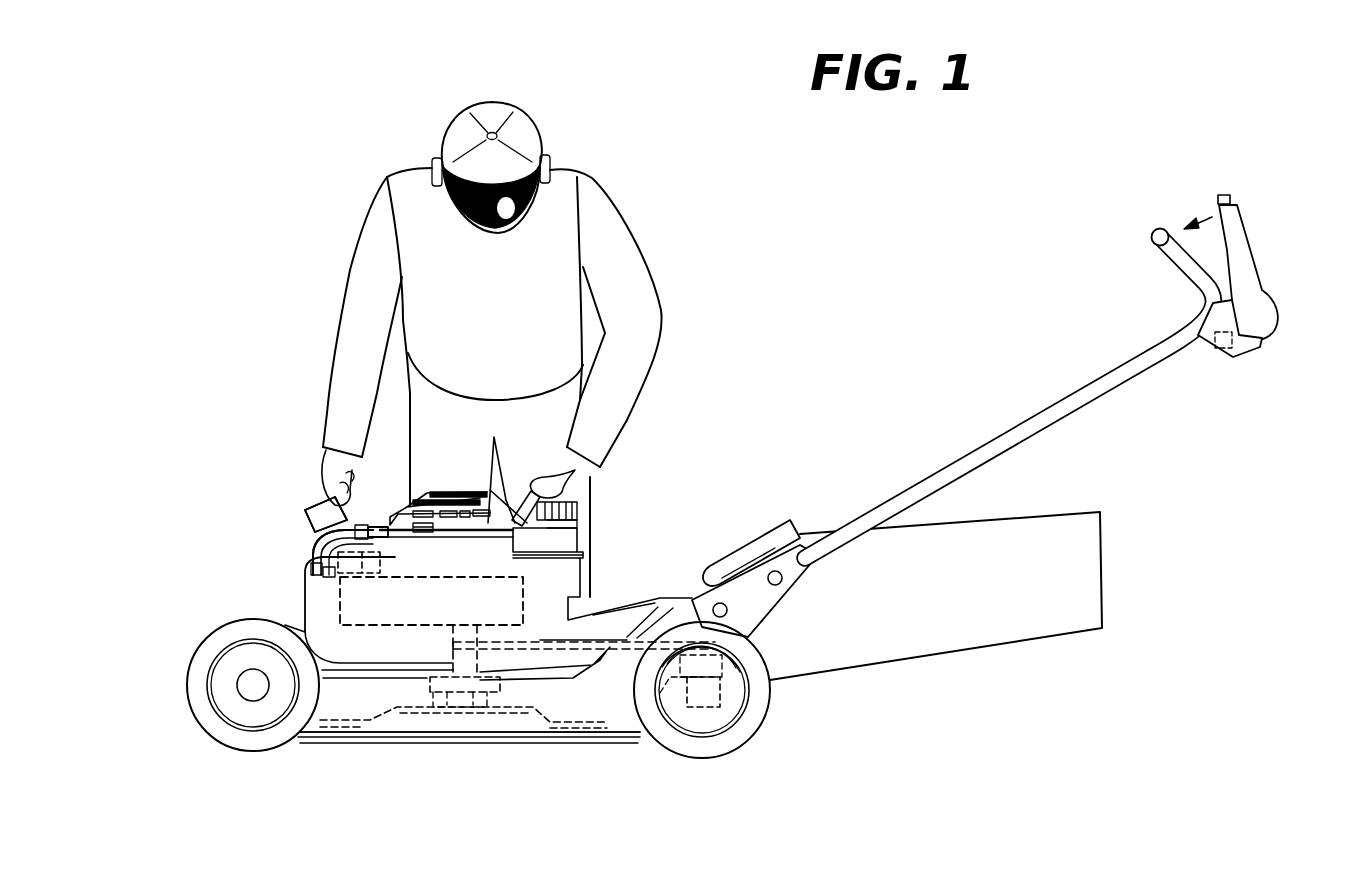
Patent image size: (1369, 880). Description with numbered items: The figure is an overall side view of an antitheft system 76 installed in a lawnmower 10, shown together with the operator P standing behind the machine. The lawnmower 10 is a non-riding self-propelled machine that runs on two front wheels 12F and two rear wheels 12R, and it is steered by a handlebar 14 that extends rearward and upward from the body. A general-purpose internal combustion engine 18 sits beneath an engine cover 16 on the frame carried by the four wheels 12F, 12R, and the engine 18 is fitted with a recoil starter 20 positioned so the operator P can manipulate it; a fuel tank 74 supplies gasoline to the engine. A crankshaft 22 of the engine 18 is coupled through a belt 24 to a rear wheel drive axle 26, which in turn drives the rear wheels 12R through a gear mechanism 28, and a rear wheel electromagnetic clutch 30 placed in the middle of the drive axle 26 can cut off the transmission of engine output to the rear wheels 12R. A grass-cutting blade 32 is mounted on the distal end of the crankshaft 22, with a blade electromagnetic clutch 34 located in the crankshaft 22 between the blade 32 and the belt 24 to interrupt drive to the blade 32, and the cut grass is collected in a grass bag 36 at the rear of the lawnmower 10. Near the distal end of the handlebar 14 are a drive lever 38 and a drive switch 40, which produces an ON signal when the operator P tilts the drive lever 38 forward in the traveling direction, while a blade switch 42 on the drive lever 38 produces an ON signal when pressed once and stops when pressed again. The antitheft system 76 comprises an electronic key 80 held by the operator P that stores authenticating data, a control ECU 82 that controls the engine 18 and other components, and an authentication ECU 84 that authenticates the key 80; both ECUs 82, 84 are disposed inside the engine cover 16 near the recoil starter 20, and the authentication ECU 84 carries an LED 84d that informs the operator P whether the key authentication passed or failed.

The operator P is at (631, 229).
The lawnmower 10 is at (742, 489).
The front wheels 12F is at (223, 735).
The rear wheels 12R is at (735, 740).
The handlebar 14 is at (992, 455).
The engine cover 16 is at (318, 545).
The internal combustion engine 18 is at (338, 610).
The recoil starter 20 is at (545, 475).
The crankshaft 22 is at (497, 717).
The belt 24 is at (605, 632).
The rear wheel drive axle 26 is at (748, 680).
The gear mechanism 28 is at (740, 707).
The rear wheel electromagnetic clutch 30 is at (665, 695).
The grass-cutting blade 32 is at (397, 720).
The blade electromagnetic clutch 34 is at (433, 713).
The grass bag 36 is at (978, 632).
The drive lever 38 is at (1237, 233).
The drive switch 40 is at (1222, 352).
The blade switch 42 is at (1223, 195).
The fuel tank 74 is at (560, 567).
The antitheft system 76 is at (290, 484).
The electronic key 80 is at (312, 490).
The control ECU 82 is at (383, 543).
The authentication ECU 84 is at (305, 562).
The LED 84d is at (357, 522).